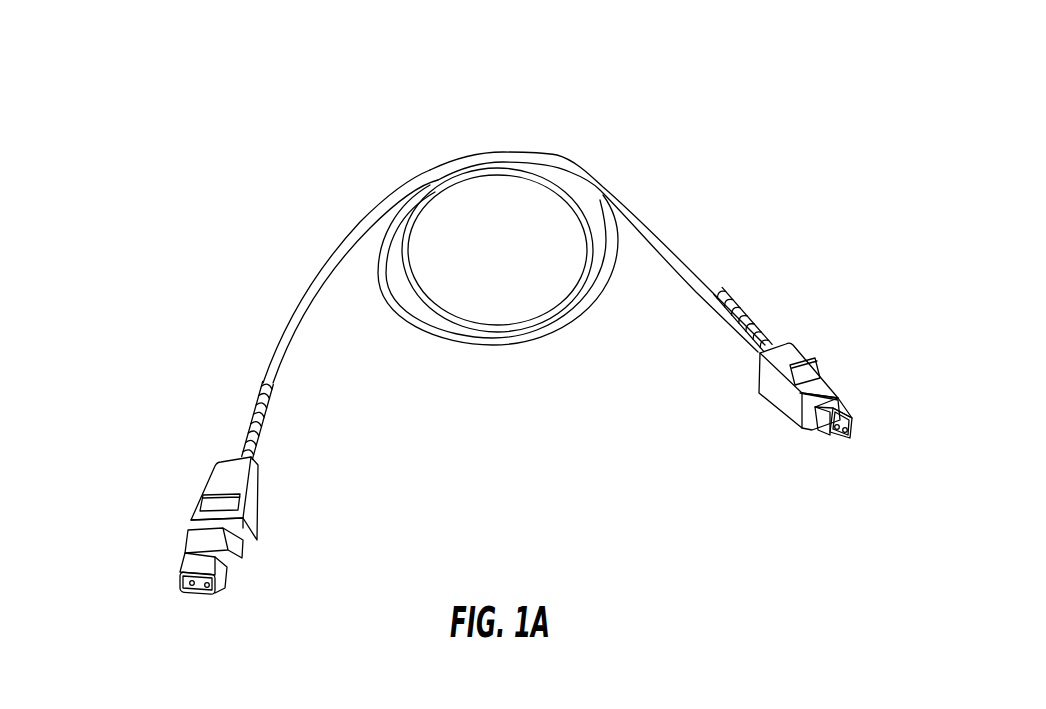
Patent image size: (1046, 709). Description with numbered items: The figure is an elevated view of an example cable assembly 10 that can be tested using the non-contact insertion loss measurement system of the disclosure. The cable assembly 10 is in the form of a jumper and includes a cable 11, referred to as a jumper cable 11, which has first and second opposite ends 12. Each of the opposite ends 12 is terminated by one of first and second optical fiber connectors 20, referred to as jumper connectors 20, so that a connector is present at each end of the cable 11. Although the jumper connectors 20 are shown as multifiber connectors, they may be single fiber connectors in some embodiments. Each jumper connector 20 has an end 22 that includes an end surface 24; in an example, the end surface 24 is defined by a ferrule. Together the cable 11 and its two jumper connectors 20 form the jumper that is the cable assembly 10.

The cable assembly 10 is at (309, 77).
The cable 11 is at (672, 245).
The first and second opposite ends 12 is at (158, 516).
The optical fiber connector 20 is at (207, 466).
The end 22 is at (197, 590).
The end surface 24 is at (519, 506).